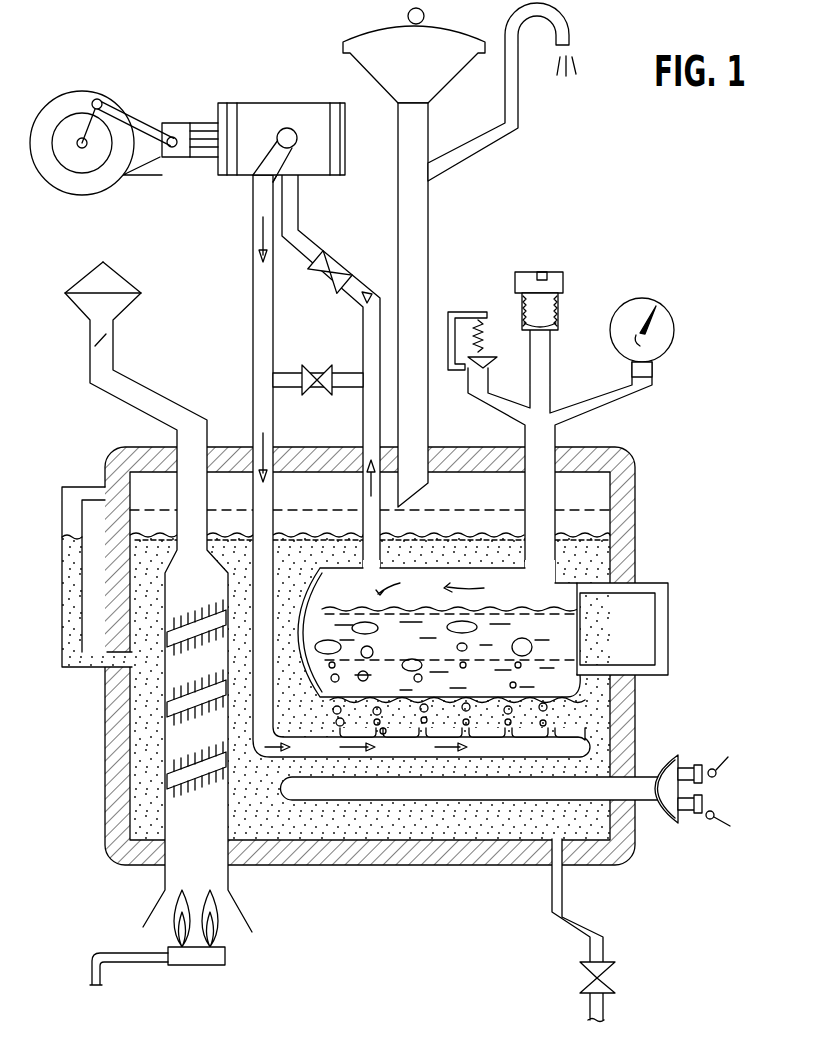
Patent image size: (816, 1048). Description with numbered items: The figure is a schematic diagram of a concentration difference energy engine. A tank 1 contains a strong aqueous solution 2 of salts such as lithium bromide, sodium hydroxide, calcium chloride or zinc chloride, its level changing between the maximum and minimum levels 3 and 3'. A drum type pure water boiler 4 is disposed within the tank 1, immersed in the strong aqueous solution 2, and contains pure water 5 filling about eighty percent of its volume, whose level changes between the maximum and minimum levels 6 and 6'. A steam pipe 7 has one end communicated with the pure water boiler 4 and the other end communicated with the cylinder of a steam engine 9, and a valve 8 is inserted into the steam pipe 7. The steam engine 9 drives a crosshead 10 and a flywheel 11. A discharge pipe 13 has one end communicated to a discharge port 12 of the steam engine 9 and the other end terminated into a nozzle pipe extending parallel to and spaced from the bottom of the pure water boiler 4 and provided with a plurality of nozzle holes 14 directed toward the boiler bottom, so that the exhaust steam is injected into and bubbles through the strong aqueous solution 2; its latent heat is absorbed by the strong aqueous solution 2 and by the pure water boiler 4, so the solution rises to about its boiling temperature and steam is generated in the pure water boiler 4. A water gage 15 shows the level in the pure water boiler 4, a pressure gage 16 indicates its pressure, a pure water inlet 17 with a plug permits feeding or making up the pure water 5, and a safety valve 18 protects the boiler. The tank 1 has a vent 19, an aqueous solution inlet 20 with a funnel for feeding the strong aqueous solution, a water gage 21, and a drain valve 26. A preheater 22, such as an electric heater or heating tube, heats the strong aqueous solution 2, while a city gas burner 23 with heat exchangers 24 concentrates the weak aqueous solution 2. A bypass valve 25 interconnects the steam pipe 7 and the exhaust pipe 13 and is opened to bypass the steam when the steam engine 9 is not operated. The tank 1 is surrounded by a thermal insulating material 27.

The tank 1 is at (612, 497).
The strong aqueous solution 2 is at (605, 547).
The maximum level 3 is at (370, 509).
The minimum level 3' is at (370, 493).
The pure water boiler 4 is at (618, 704).
The pure water 5 is at (547, 627).
The maximum level 6 is at (434, 635).
The minimum level 6' is at (451, 620).
The steam pipe 7 is at (370, 423).
The valve 8 is at (339, 265).
The steam engine 9 is at (312, 103).
The crosshead 10 is at (178, 123).
The flywheel 11 is at (82, 137).
The discharge port 12 is at (284, 128).
The discharge pipe 13 is at (253, 240).
The nozzle holes 14 is at (383, 731).
The water gage 15 is at (662, 650).
The pressure gage 16 is at (650, 299).
The pure water inlet 17 is at (558, 326).
The safety valve 18 is at (487, 312).
The vent 19 is at (515, 110).
The aqueous solution inlet 20 is at (460, 64).
The water gage 21 is at (62, 537).
The preheater 22 is at (670, 818).
The city gas burner 23 is at (202, 958).
The heat exchangers 24 is at (187, 722).
The bypass valve 25 is at (317, 365).
The drain valve 26 is at (604, 961).
The thermal insulating material 27 is at (108, 803).